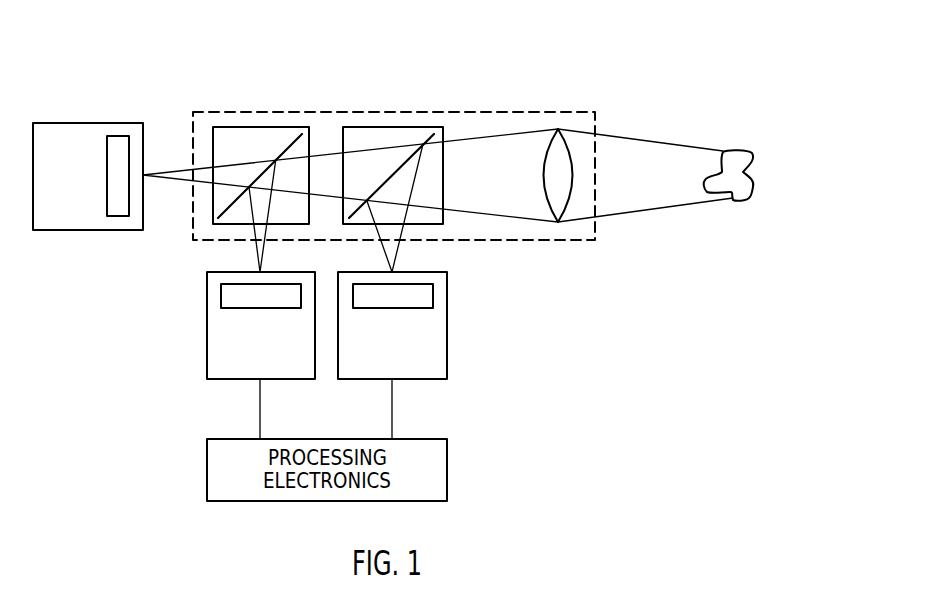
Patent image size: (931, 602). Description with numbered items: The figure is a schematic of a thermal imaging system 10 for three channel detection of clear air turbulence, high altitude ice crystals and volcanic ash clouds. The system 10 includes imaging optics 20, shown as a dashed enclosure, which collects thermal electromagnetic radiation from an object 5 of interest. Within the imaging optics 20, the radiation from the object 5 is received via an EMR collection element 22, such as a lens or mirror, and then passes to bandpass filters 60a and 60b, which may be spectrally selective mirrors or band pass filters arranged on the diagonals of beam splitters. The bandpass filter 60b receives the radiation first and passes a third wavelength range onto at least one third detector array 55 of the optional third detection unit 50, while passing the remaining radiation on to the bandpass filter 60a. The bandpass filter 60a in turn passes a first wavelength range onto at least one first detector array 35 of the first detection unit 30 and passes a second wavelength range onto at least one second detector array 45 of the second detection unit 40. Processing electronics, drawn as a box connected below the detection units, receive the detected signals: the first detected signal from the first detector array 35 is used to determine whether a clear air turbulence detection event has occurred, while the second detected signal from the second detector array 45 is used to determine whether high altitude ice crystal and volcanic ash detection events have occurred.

The object 5 is at (752, 197).
The thermal imaging system 10 is at (503, 45).
The imaging optics 20 is at (571, 246).
The EMR collection element 22 is at (572, 155).
The first detection unit 30 is at (48, 123).
The first detector array 35 is at (118, 136).
The second detection unit 40 is at (207, 364).
The second detector array 45 is at (221, 291).
The third detection unit 50 is at (447, 365).
The third detector array 55 is at (433, 292).
The bandpass filter 60a is at (255, 127).
The bandpass filter 60b is at (385, 127).